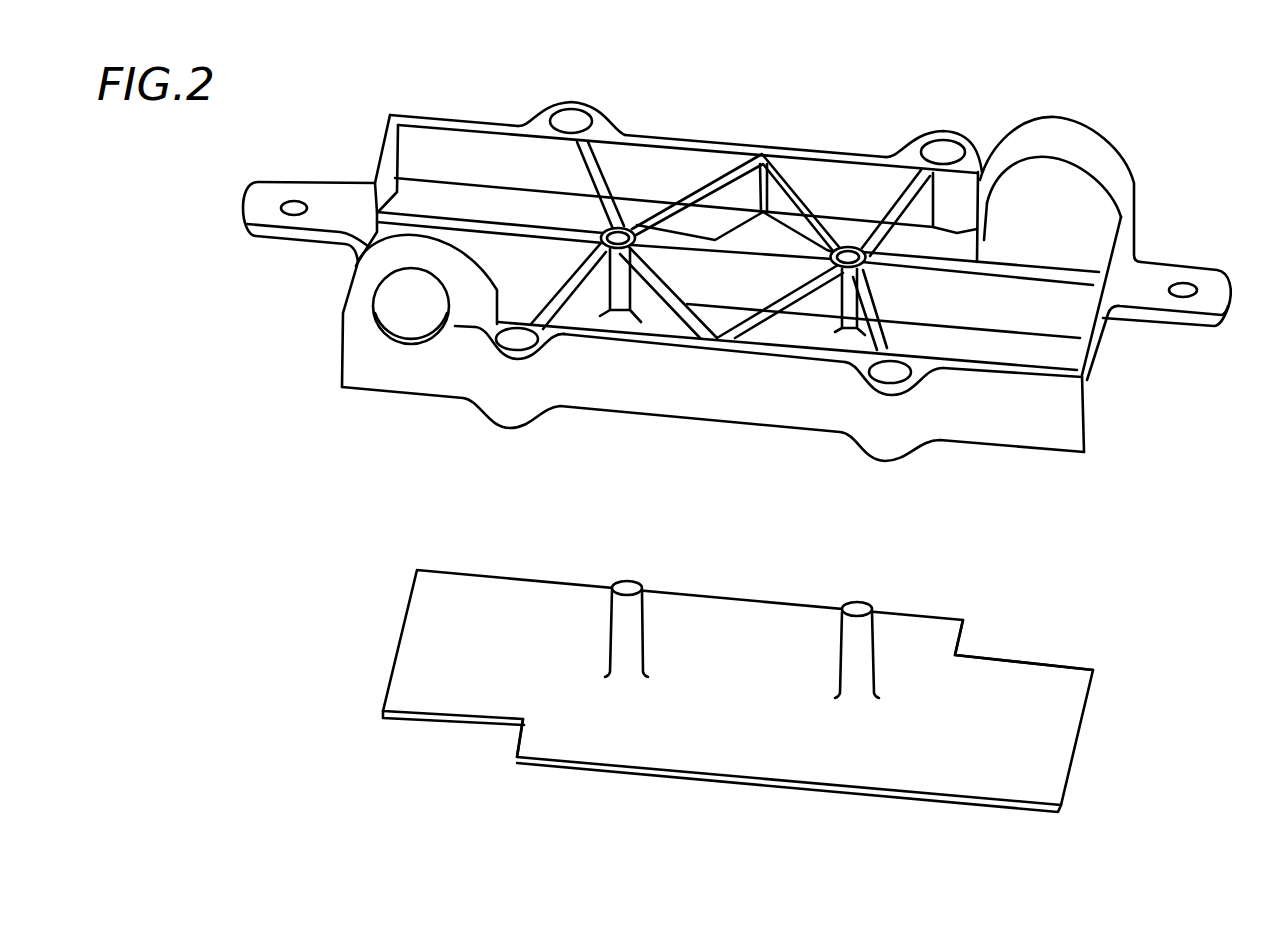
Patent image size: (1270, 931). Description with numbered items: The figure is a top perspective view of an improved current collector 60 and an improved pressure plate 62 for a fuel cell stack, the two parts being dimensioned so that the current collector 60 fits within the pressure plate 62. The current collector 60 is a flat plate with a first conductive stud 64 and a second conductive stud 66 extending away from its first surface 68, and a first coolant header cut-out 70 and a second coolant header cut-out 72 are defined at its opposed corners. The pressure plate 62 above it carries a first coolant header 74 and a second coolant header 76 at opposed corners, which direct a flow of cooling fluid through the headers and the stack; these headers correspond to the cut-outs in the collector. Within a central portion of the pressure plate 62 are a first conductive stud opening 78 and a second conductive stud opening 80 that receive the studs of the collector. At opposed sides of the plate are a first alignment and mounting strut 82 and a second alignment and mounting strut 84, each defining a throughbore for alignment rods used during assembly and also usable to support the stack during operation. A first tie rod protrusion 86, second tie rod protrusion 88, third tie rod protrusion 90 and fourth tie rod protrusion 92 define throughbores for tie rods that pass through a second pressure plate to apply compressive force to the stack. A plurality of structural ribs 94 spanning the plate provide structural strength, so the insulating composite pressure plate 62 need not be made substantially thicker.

The current collector 60 is at (682, 701).
The pressure plate 62 is at (747, 269).
The first conductive stud 64 is at (627, 615).
The second conductive stud 66 is at (857, 636).
The first surface 68 is at (837, 768).
The first coolant header cut-out 70 is at (478, 735).
The second coolant header cut-out 72 is at (995, 638).
The first coolant header 74 is at (357, 313).
The second coolant header 76 is at (1080, 133).
The first conductive stud opening 78 is at (617, 233).
The second conductive stud opening 80 is at (847, 257).
The first alignment and mounting strut 82 is at (307, 186).
The second alignment and mounting strut 84 is at (1207, 276).
The first tie rod protrusion 86 is at (585, 103).
The second tie rod protrusion 88 is at (962, 128).
The third tie rod protrusion 90 is at (903, 440).
The fourth tie rod protrusion 92 is at (528, 406).
The structural ribs 94 is at (782, 192).